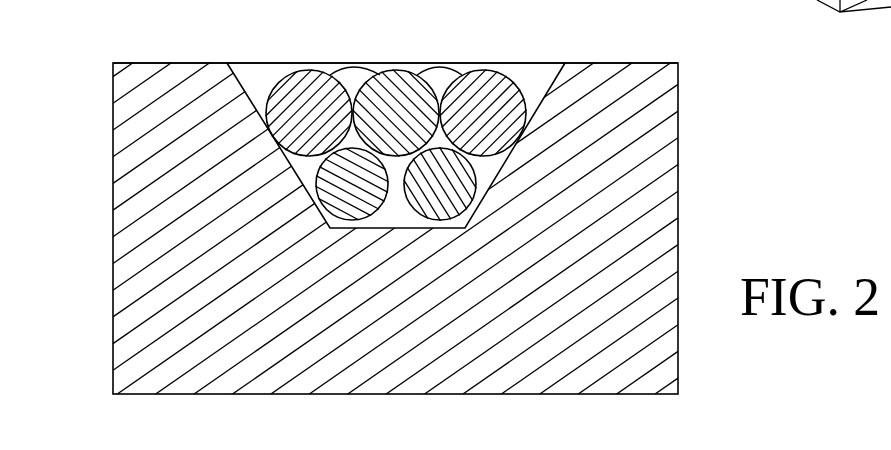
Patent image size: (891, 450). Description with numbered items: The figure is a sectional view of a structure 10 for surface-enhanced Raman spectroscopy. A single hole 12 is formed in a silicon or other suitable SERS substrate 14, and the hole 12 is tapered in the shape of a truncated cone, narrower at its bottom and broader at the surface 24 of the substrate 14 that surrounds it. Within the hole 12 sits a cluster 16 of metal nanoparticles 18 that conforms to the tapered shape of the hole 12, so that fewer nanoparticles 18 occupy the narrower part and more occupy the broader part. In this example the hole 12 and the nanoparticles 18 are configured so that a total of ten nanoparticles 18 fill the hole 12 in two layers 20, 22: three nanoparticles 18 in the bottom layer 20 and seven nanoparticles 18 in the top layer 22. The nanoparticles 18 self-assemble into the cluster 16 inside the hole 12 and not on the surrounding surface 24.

The structure 10 is at (449, 225).
The hole 12 is at (538, 72).
The SERS substrate 14 is at (670, 155).
The cluster 16 is at (499, 61).
The metal nanoparticles 18 is at (410, 156).
The bottom layer 20 is at (477, 184).
The top layer 22 is at (430, 75).
The surface 24 is at (163, 62).